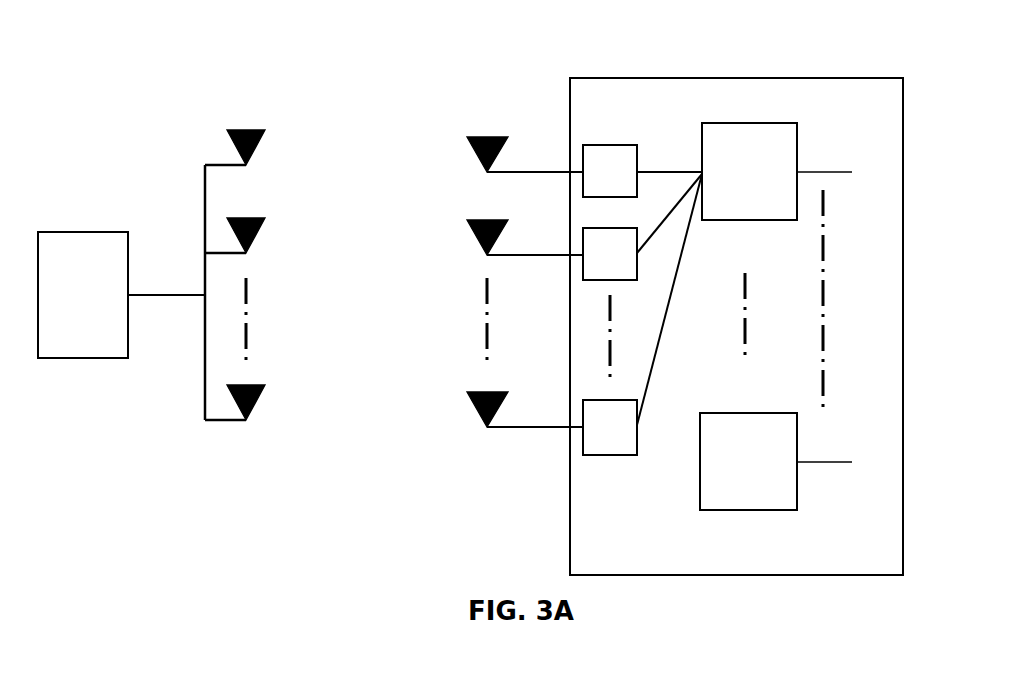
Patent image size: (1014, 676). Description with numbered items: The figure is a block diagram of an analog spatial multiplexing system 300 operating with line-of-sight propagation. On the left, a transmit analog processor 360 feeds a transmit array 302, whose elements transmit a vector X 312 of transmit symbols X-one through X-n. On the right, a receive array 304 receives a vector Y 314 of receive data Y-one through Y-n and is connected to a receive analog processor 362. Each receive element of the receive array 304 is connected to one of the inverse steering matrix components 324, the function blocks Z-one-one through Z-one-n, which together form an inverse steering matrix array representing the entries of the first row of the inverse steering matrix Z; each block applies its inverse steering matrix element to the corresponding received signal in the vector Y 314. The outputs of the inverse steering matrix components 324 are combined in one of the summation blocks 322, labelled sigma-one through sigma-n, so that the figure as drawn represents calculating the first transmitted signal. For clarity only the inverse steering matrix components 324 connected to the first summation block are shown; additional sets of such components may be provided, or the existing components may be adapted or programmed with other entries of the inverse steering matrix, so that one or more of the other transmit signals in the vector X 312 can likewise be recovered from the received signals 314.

The analog spatial multiplexing system 300 is at (187, 70).
The transmit array 302 is at (233, 436).
The vector X of transmit symbols 312 is at (286, 434).
The receive array 304 is at (492, 454).
The vector Y of receive data 314 is at (453, 434).
The summation blocks 322 is at (712, 102).
The inverse steering matrix components 324 is at (609, 474).
The transmit analog processor 360 is at (121, 295).
The receive analog processor 362 is at (736, 326).